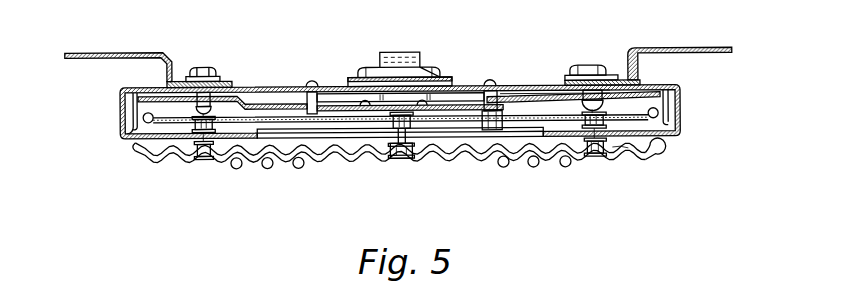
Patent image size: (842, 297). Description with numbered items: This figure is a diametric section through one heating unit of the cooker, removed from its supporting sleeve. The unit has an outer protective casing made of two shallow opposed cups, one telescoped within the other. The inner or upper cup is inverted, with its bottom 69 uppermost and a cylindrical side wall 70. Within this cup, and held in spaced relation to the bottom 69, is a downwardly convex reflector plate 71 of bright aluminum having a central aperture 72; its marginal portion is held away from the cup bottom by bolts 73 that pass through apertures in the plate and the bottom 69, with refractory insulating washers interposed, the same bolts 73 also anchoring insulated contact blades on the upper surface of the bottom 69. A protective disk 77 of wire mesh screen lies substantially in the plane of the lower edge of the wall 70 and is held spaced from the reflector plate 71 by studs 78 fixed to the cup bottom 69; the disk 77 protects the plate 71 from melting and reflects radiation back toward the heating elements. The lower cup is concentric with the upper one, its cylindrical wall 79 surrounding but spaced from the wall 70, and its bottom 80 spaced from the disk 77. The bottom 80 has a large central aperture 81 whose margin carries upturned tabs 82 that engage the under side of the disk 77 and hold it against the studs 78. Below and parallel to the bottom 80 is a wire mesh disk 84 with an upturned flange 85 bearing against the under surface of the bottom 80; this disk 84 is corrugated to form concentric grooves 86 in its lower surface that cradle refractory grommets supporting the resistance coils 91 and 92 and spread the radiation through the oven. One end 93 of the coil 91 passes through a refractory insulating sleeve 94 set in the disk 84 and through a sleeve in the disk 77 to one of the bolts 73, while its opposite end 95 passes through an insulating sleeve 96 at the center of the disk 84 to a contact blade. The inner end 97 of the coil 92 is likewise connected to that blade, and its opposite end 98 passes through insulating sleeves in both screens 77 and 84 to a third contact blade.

The bottom of upper cup 69 is at (515, 87).
The cylindrical side wall of upper cup 70 is at (670, 100).
The reflector plate 71 is at (266, 107).
The central aperture 72 is at (478, 87).
The bolts 73 is at (203, 67).
The protective disk 77 is at (638, 108).
The studs 78 is at (311, 81).
The cylindrical wall of lower cup 79 is at (678, 111).
The bottom of lower cup 80 is at (635, 148).
The central aperture 81 is at (483, 141).
The upturned tabs 82 is at (251, 166).
The wire mesh disk 84 is at (343, 160).
The upturned flange 85 is at (653, 157).
The concentric grooves 86 is at (475, 134).
The resistance coil 91 is at (233, 168).
The resistance coil 92 is at (267, 170).
The end of coil 93 is at (172, 157).
The refractory insulating sleeve 94 is at (190, 165).
The opposite end of coil 95 is at (393, 150).
The insulating sleeve 96 is at (404, 165).
The inner end of coil 97 is at (392, 160).
The opposite end of coil 98 is at (585, 165).